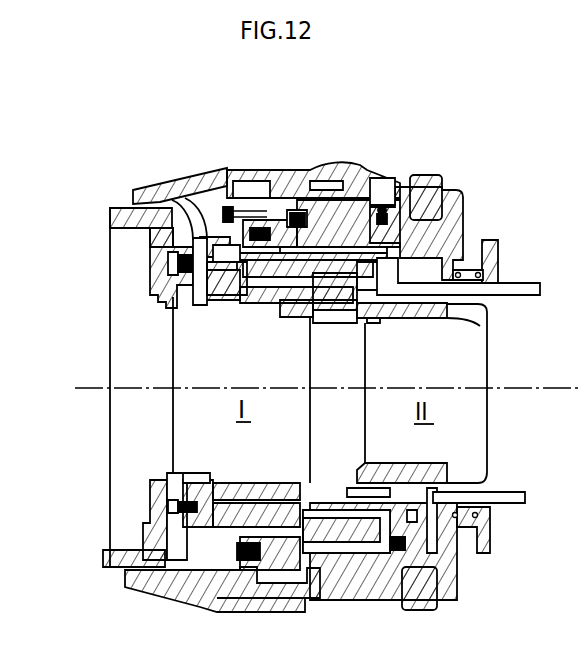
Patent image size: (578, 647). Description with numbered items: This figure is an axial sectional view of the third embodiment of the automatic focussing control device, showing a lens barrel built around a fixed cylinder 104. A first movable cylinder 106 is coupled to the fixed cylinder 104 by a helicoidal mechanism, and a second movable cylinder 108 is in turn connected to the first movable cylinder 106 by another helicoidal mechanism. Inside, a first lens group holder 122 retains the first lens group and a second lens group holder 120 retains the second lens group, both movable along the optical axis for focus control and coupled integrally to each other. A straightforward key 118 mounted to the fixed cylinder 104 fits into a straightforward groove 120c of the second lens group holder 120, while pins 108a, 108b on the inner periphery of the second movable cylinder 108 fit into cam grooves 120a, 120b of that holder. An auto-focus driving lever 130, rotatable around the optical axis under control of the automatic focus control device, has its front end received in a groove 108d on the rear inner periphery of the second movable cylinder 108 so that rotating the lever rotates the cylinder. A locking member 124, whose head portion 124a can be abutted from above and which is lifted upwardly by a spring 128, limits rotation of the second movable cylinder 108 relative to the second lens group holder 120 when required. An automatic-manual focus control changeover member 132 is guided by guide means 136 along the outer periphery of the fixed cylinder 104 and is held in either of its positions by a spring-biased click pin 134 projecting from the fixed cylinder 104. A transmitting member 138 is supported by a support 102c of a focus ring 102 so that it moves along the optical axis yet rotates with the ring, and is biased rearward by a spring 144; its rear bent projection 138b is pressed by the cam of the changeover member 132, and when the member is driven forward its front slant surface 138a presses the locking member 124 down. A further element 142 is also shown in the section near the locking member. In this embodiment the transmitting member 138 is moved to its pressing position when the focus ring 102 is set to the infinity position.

The focus ring 102 is at (182, 192).
The support 102c is at (247, 200).
The fixed cylinder 104 is at (455, 192).
The first movable cylinder 106 is at (367, 183).
The second movable cylinder 108 is at (320, 235).
The pin 108a is at (340, 298).
The pin 108b is at (307, 507).
The groove 108d is at (453, 234).
The straightforward key 118 is at (415, 533).
The second lens group holder 120 is at (487, 325).
The cam groove 120a is at (312, 275).
The cam groove 120b is at (277, 478).
The straightforward groove 120c is at (365, 455).
The first lens group holder 122 is at (173, 297).
The locking member 124 is at (153, 245).
The head portion 124a is at (150, 227).
The spring 128 is at (150, 280).
The auto-focus driving lever 130 is at (524, 284).
The automatic-manual focus control changeover member 132 is at (443, 177).
The click pin 134 is at (450, 197).
The guide means 136 is at (375, 193).
The transmitting member 138 is at (290, 210).
The slant surface 138a is at (172, 200).
The bent projection 138b is at (310, 240).
The screw 142 is at (284, 222).
The spring 144 is at (225, 205).